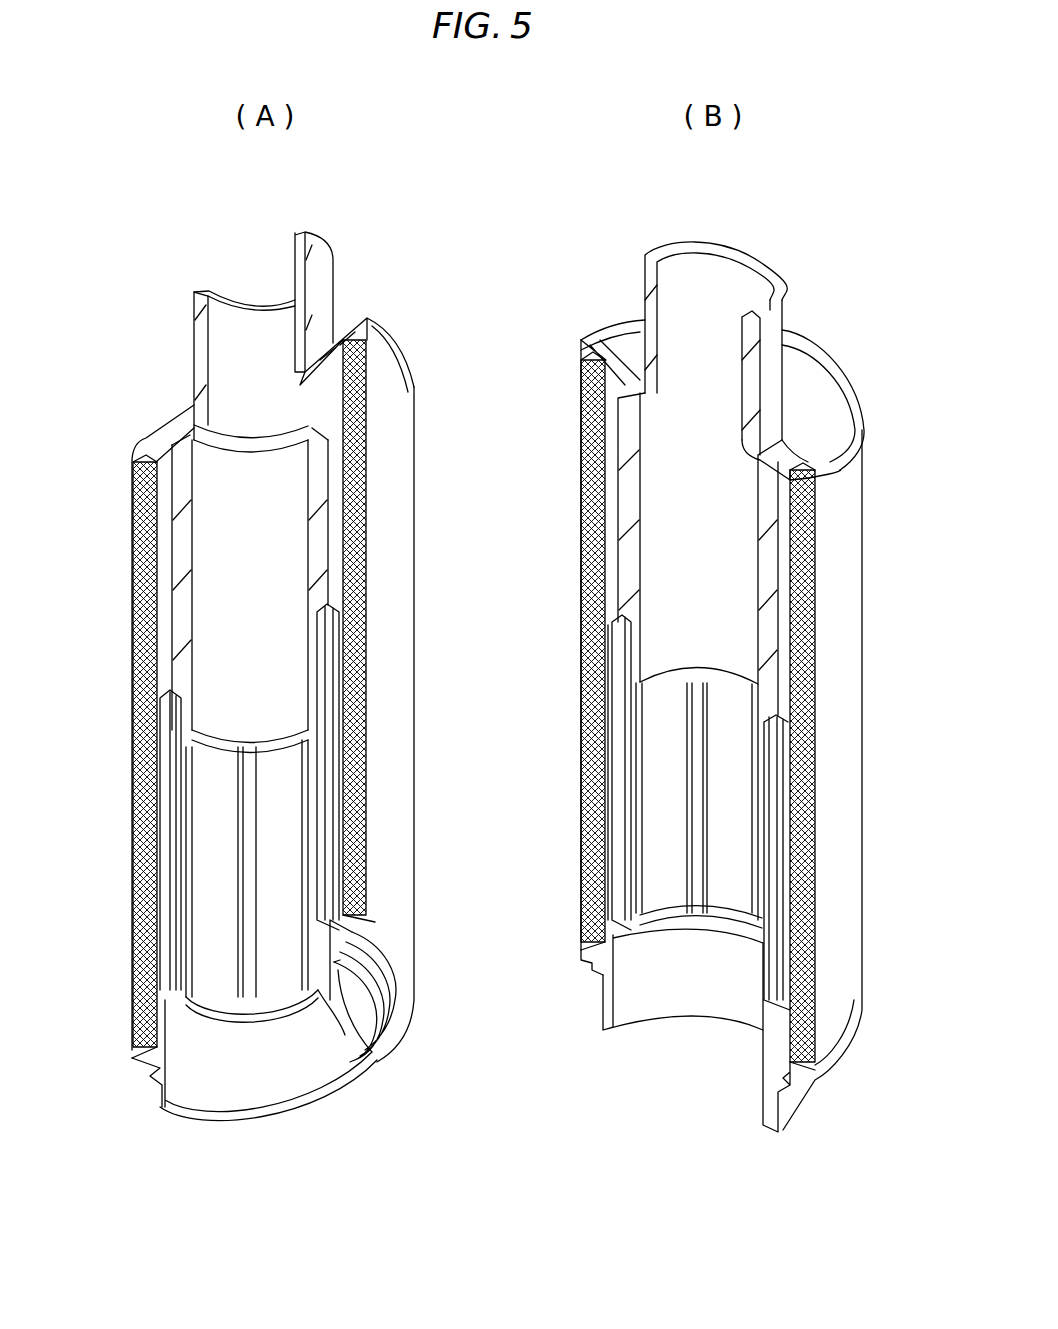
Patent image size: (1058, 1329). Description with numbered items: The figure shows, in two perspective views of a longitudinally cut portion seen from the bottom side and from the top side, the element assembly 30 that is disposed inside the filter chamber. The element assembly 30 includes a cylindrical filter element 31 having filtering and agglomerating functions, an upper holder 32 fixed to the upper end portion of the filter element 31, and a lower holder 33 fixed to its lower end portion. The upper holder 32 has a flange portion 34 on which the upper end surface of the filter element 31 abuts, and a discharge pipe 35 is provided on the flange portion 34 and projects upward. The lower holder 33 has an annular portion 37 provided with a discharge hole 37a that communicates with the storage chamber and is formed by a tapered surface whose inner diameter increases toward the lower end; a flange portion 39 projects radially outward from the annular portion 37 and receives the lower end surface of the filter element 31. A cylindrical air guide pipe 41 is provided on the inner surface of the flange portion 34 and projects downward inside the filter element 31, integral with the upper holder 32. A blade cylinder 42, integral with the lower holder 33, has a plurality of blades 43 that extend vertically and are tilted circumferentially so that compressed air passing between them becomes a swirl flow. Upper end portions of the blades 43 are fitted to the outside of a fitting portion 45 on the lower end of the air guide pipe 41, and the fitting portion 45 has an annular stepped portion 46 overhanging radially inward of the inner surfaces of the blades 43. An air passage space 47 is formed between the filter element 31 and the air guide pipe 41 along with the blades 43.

The element assembly 30 is at (883, 610).
The filter element 31 is at (400, 500).
The upper holder 32 is at (178, 383).
The lower holder 33 is at (410, 1010).
The flange portion 34 is at (370, 327).
The discharge pipe 35 is at (196, 320).
The annular portion 37 is at (163, 1050).
The discharge hole 37a is at (283, 1090).
The flange portion 39 is at (158, 1050).
The air guide pipe 41 is at (183, 597).
The blade cylinder 42 is at (283, 845).
The blade 43 is at (203, 855).
The fitting portion 45 is at (185, 712).
The annular stepped portion 46 is at (290, 735).
The air passage space 47 is at (158, 662).